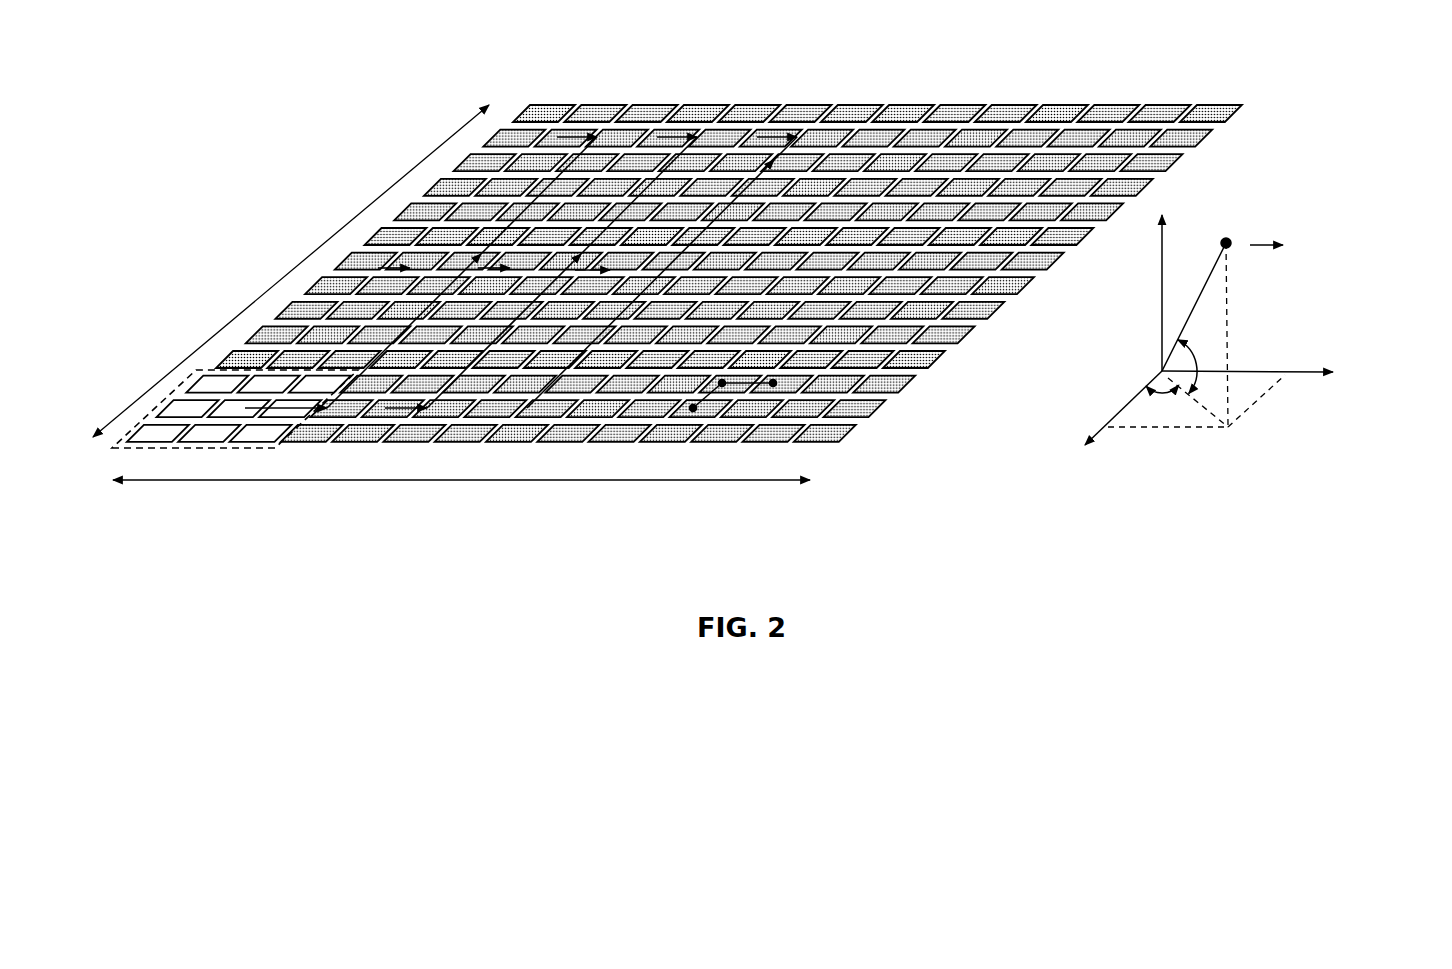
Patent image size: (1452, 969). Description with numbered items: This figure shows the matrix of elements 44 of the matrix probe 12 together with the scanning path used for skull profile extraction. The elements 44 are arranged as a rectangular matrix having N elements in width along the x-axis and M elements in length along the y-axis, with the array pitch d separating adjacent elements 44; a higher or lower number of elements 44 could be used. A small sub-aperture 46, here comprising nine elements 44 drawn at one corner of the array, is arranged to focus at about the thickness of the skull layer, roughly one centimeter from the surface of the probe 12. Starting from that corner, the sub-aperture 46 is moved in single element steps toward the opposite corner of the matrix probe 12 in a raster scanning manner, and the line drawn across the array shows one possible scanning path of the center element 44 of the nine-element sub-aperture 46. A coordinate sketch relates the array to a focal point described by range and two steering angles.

The matrix probe 12 is at (345, 77).
The elements 44 is at (547, 102).
The sub-aperture 46 is at (168, 410).